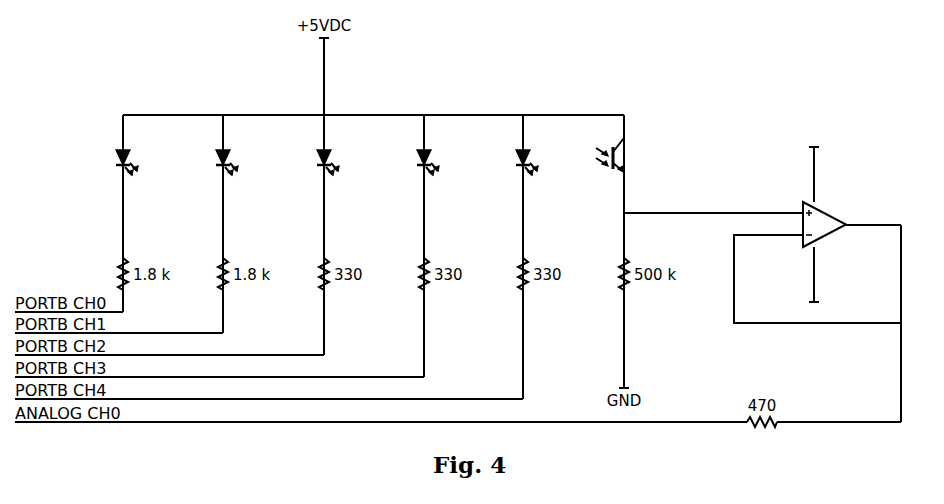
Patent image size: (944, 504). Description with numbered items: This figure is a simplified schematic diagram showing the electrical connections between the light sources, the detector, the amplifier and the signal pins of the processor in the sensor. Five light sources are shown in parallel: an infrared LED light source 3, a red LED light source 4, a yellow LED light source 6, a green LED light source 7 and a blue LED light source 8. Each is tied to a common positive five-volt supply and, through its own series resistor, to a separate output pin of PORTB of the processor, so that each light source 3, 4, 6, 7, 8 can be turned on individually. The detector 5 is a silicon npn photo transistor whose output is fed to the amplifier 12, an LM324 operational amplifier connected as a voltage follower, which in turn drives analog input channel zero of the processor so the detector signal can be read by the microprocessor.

The light source 3 is at (130, 152).
The light source 4 is at (230, 152).
The detector 5 is at (628, 149).
The light source 6 is at (331, 152).
The light source 7 is at (431, 152).
The light source 8 is at (531, 152).
The amplifier 12 is at (822, 211).